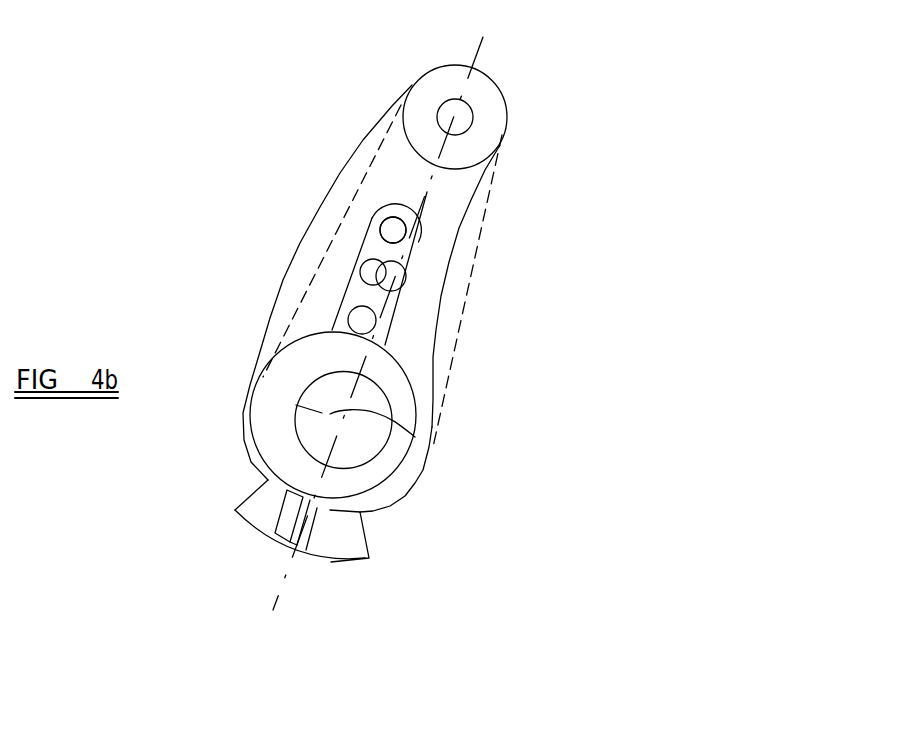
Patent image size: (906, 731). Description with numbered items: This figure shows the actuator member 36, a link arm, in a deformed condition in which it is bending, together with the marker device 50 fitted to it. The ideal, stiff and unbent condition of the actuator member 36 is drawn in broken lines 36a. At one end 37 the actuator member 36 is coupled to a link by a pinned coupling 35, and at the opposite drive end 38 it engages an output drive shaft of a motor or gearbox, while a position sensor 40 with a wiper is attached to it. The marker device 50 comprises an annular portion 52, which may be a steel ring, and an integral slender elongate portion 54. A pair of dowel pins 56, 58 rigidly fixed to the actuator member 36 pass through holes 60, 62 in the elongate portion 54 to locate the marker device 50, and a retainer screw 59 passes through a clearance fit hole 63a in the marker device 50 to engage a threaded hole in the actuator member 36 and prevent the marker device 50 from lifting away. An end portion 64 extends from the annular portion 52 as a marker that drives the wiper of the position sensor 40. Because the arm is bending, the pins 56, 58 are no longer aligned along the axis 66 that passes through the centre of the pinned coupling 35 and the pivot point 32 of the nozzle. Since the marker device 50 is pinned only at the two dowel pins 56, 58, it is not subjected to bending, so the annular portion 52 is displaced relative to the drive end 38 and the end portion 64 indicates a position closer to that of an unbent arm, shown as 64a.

The pivot point 32 is at (362, 428).
The pinned coupling 35 is at (473, 118).
The actuator member 36 is at (344, 170).
The broken lines 36a is at (448, 300).
The end 37 is at (500, 88).
The drive end 38 is at (397, 502).
The position sensor 40 is at (332, 563).
The marker device 50 is at (398, 360).
The annular portion 52 is at (378, 457).
The elongate portion 54 is at (379, 209).
The dowel pin 56 is at (375, 324).
The dowel pin 58 is at (405, 233).
The screw 59 is at (389, 277).
The hole 60 is at (349, 319).
The hole 62 is at (380, 229).
The clearance fit hole 63a is at (360, 270).
The end portion 64 is at (287, 520).
The unbent end portion position 64a is at (316, 500).
The axis 66 is at (478, 42).